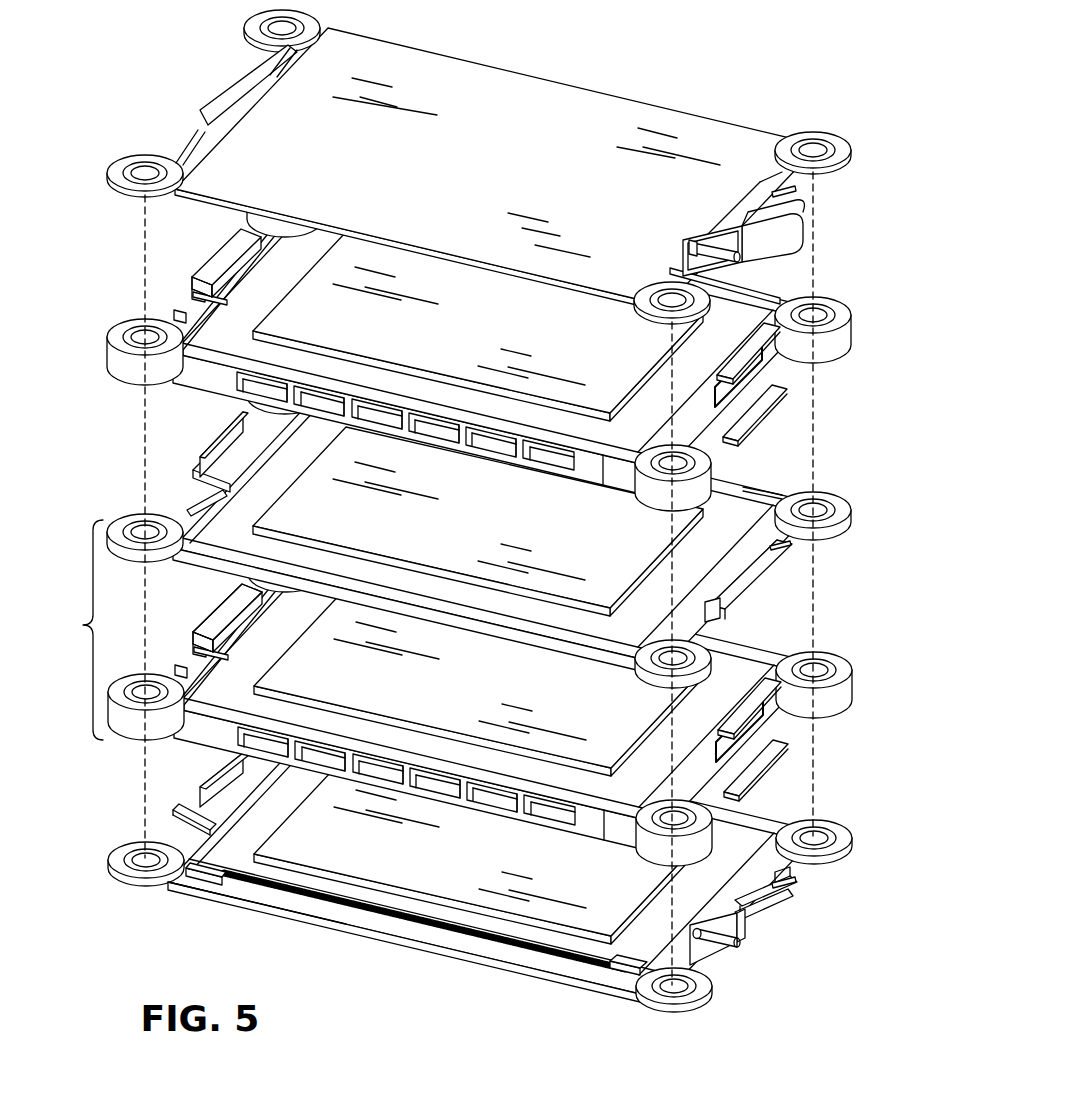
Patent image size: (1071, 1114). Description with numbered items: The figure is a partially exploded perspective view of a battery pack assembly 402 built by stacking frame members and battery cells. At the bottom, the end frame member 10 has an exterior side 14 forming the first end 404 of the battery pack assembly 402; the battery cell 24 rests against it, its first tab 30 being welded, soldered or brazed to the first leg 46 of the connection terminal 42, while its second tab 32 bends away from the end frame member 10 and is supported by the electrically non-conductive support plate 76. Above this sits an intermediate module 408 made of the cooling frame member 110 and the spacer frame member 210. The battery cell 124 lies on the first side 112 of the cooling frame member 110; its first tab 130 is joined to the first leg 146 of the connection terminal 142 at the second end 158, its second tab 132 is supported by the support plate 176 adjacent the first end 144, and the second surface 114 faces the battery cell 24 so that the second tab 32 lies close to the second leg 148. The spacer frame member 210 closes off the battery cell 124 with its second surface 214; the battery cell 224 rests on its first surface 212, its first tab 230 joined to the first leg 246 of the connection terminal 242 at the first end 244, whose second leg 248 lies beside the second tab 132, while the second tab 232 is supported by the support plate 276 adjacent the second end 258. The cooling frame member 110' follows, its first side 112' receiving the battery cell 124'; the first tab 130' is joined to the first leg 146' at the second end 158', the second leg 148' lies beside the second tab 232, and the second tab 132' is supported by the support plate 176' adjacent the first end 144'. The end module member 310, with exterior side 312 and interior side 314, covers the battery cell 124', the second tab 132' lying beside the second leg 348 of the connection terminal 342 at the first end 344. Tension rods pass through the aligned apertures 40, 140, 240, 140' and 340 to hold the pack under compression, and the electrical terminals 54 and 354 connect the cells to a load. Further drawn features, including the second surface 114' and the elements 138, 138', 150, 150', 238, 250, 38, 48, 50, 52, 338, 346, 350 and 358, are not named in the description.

The battery pack assembly 402 is at (459, 526).
The exterior side 312 is at (520, 80).
The interior side 314 is at (446, 258).
The end module member 310 is at (486, 167).
The tab 358 is at (205, 142).
The mounting boss 338 is at (835, 142).
The aperture 340 is at (813, 146).
The first end 344 is at (784, 172).
The terminal pin 350 is at (797, 191).
The electrical terminal 354 is at (708, 238).
The bracket flange 346 is at (792, 222).
The connection terminal 342 is at (804, 240).
The second leg 348 is at (782, 270).
The cooling frame member 110' is at (481, 341).
The first tab 130' is at (216, 263).
The first leg 146' is at (179, 276).
The second leg 148' is at (162, 304).
The frame corner 150' is at (125, 348).
The second end 158' is at (227, 292).
The first side 112' is at (405, 399).
The second surface 114' is at (401, 431).
The battery cell 124' is at (478, 326).
The aperture 140' is at (832, 303).
The mounting boss 138' is at (835, 315).
The first end 144' is at (827, 347).
The second tab 132' is at (788, 365).
The electrically non-conductive support plate 176' is at (764, 415).
The spacer frame member 210 is at (490, 527).
The second electrically conductive tab 232 is at (235, 430).
The electrically non-conductive support plate 276 is at (200, 466).
The second end 258 is at (196, 505).
The battery cell 224 is at (478, 521).
The first surface 212 is at (500, 612).
The second surface 214 is at (525, 645).
The first end 244 is at (760, 492).
The aperture 240 is at (814, 506).
The mounting boss 238 is at (846, 511).
The boss side wall 250 is at (810, 540).
The first leg 246 is at (800, 548).
The connection terminal 242 is at (800, 568).
The first electrically conductive tab 230 is at (765, 568).
The second leg 248 is at (740, 603).
The intermediate module 408 is at (62, 630).
The cooling frame member 110 is at (476, 708).
The connection terminal 142 is at (224, 606).
The first electrically conductive tab 130 is at (206, 618).
The first leg 146 is at (181, 634).
The second leg 148 is at (189, 660).
The frame corner 150 is at (135, 697).
The second end 158 is at (228, 647).
The first side 112 is at (514, 722).
The second surface 114 is at (402, 778).
The battery cell 124 is at (479, 681).
The first end 144 is at (820, 700).
The second tab 132 is at (762, 727).
The electrically non-conductive support plate 176 is at (757, 774).
The aperture 140 is at (654, 843).
The mounting boss 138 is at (678, 845).
The end frame member 10 is at (485, 870).
The exterior side 14 is at (318, 915).
The first end 404 is at (424, 962).
The battery cell 24 is at (479, 849).
The second tab 32 is at (214, 790).
The electrically non-conductive support plate 76 is at (215, 830).
The aperture 40 is at (668, 995).
The mounting boss 38 is at (700, 1000).
The end notch 52 is at (790, 877).
The terminal pin 50 is at (795, 887).
The first tab 30 is at (785, 905).
The connection terminal 42 is at (770, 920).
The bracket plate 48 is at (760, 935).
The first leg 46 is at (745, 950).
The electrical terminal 54 is at (720, 950).